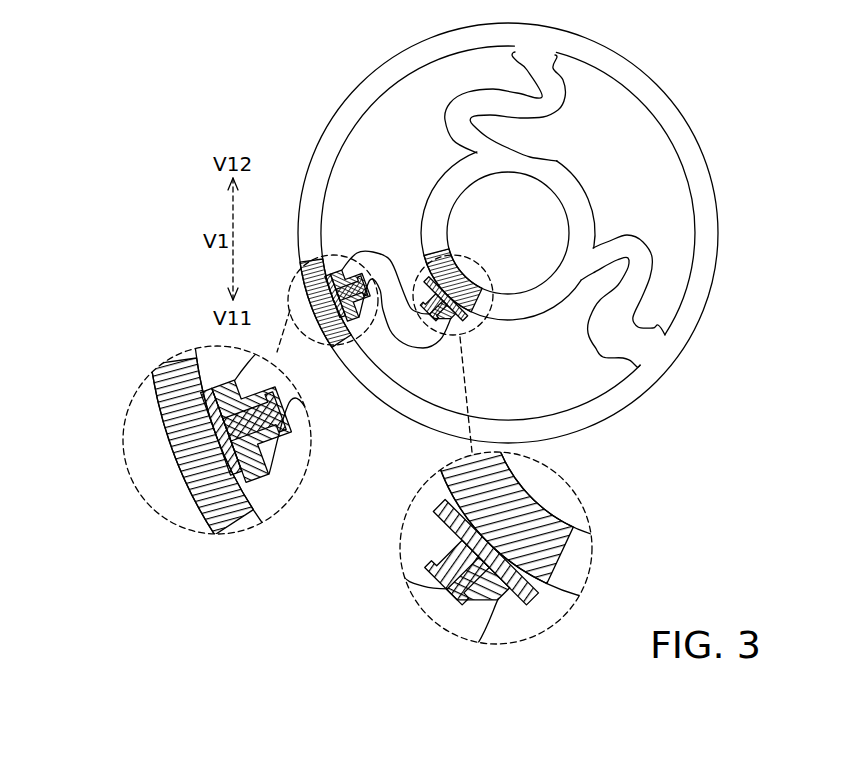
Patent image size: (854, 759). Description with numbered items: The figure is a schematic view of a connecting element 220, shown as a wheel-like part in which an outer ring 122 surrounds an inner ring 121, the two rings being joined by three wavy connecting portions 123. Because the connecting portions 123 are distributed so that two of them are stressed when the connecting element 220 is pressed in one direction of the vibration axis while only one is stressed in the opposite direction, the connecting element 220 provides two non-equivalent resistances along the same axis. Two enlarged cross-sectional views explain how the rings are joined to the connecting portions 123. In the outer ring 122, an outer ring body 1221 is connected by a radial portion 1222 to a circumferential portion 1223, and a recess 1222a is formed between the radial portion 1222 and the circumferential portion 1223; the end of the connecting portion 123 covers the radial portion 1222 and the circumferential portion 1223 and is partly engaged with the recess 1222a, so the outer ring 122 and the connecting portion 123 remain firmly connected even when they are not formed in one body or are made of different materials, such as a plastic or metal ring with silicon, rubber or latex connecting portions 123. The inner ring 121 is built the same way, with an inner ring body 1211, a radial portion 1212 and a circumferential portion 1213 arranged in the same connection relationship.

The connecting element 220 is at (305, 57).
The inner ring 121 is at (563, 192).
The outer ring 122 is at (695, 173).
The connecting portion 123 is at (605, 343).
The inner ring body 1211 is at (433, 483).
The radial portion 1212 is at (477, 553).
The circumferential portion 1213 is at (447, 535).
The outer ring body 1221 is at (146, 388).
The radial portion 1222 is at (192, 448).
The recess 1222a is at (205, 490).
The circumferential portion 1223 is at (215, 428).